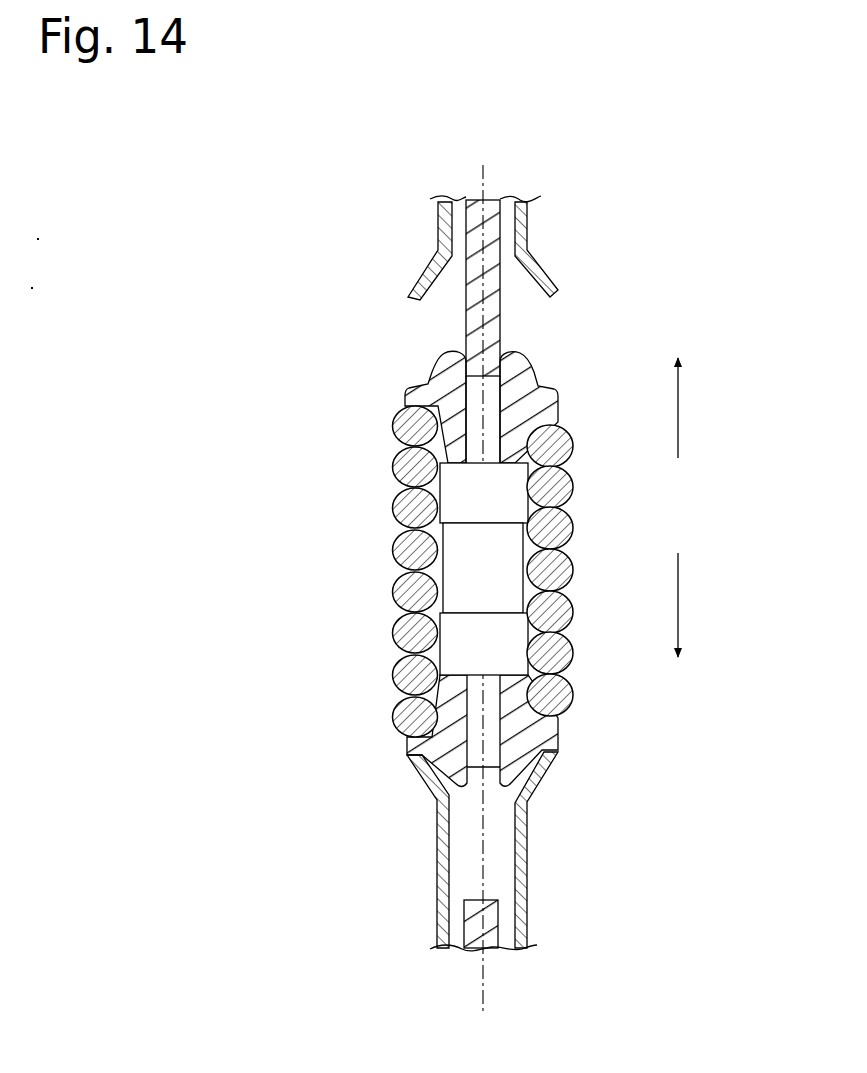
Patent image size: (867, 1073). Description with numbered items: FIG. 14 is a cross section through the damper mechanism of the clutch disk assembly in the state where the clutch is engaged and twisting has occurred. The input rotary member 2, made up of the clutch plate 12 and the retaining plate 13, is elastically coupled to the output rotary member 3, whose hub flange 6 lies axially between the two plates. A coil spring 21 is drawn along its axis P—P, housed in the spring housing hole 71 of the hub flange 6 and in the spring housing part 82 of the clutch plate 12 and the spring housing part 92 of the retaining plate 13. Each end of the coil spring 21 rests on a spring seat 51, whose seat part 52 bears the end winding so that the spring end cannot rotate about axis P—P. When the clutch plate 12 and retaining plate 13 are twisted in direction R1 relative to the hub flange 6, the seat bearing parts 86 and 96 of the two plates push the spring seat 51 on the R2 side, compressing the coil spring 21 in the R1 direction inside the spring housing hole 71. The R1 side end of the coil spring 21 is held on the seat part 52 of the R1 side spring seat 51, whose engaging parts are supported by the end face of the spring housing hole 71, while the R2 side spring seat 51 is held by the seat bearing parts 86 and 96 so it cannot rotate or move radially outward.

The input rotary member 2 is at (557, 609).
The output rotary member 3 is at (434, 245).
The hub flange 6 is at (475, 210).
The clutch plate 12 is at (540, 925).
The retaining plate 13 is at (433, 933).
The coil spring 21 is at (396, 419).
The spring seat 51 is at (545, 412).
The seat part 52 is at (441, 445).
The spring housing hole 71 is at (383, 660).
The spring housing part 82 is at (625, 478).
The seat bearing part 86 is at (537, 265).
The spring housing part 92 is at (315, 608).
The seat bearing part 96 is at (420, 278).
The axis P— P is at (480, 592).
The rotational drive direction R1 is at (680, 382).
The opposite rotational direction R2 is at (672, 628).